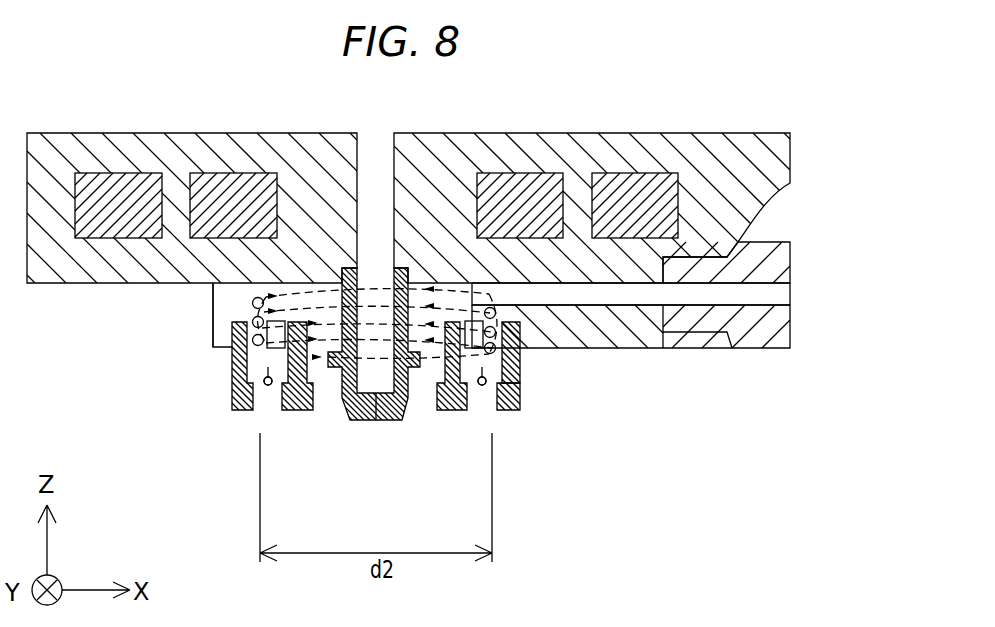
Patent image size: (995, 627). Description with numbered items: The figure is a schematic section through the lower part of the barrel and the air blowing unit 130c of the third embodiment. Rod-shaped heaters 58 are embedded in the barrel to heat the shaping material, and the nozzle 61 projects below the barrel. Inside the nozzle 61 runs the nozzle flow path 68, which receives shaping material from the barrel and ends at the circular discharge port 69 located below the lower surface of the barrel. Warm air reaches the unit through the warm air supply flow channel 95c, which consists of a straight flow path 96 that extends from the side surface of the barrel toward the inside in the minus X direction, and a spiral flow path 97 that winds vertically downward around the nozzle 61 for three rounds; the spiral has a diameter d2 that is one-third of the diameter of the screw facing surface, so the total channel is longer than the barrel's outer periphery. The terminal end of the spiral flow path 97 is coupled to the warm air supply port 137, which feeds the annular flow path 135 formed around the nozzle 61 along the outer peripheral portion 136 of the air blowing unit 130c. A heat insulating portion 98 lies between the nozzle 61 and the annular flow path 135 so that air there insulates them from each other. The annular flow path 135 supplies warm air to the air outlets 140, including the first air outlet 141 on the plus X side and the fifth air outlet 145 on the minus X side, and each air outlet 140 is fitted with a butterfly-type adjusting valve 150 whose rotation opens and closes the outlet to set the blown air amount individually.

The heater 58 is at (613, 187).
The nozzle 61 is at (350, 421).
The nozzle flow path 68 is at (253, 305).
The discharge port 69 is at (377, 420).
The straight flow path 96 is at (652, 304).
The spiral flow path 97 is at (632, 328).
The warm air supply flow channel 95c is at (718, 360).
The heat insulating portion 98 is at (424, 392).
The air blowing unit 130c is at (235, 530).
The annular flow path 135 is at (520, 377).
The outer peripheral portion 136 is at (520, 397).
The warm air supply port 137 is at (492, 314).
The air outlet 140 is at (238, 488).
The first air outlet 141 is at (496, 398).
The fifth air outlet 145 is at (266, 386).
The adjusting valve 150 is at (271, 387).